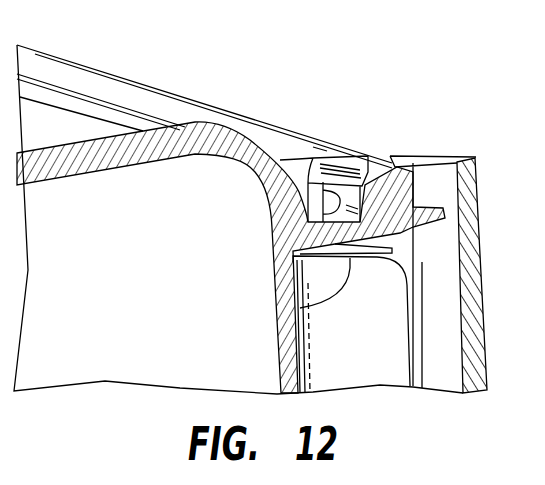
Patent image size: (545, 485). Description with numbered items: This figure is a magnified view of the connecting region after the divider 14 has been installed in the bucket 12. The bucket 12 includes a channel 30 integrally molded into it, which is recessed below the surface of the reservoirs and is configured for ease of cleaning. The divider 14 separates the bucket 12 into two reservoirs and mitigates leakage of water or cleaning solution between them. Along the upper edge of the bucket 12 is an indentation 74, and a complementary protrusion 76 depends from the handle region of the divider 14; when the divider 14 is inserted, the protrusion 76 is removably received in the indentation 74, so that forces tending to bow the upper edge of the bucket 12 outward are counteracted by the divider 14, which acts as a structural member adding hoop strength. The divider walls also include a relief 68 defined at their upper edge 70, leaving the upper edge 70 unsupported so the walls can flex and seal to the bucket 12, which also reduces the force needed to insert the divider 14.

The bucket 12 is at (77, 63).
The divider 14 is at (143, 124).
The channel 30 is at (443, 157).
The relief 68 is at (292, 263).
The upper edge 70 is at (300, 308).
The indentation 74 is at (350, 178).
The protrusion 76 is at (332, 163).